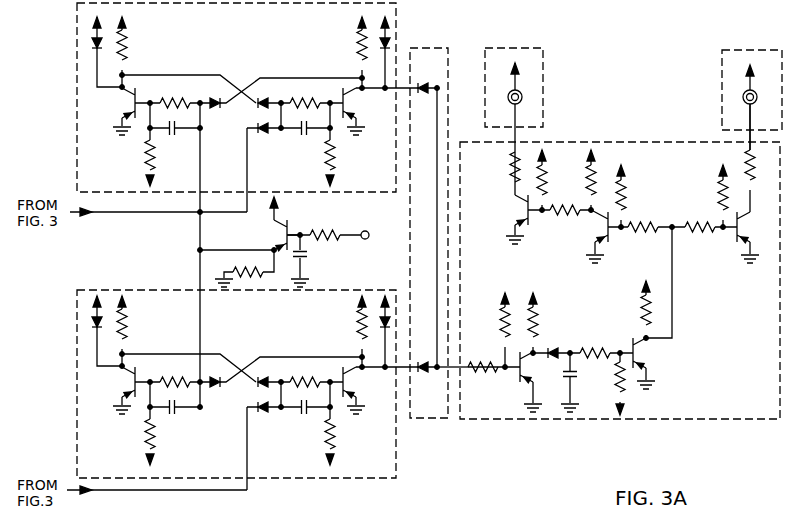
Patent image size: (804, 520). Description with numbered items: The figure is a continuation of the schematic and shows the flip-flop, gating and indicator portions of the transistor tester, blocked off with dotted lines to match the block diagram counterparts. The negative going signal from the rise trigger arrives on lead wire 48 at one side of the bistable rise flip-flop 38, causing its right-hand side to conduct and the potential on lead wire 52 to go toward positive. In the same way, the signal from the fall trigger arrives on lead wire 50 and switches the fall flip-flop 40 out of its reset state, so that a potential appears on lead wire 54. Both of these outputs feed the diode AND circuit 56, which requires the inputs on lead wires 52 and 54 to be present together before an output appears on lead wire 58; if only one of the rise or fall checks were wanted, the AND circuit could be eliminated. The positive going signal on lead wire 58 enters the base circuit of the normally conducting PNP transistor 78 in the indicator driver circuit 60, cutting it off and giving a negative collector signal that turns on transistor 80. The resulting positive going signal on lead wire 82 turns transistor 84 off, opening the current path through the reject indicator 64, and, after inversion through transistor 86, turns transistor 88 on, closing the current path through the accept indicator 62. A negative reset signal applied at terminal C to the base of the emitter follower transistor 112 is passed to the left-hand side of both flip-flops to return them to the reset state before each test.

The fall flip-flop 40 is at (75, 33).
The rise flip-flop 38 is at (75, 325).
The lead wire 50 is at (147, 212).
The lead wire 48 is at (137, 492).
The transistor 112 is at (280, 222).
The lead wire 54 is at (404, 52).
The lead wire 52 is at (402, 374).
The AND circuit 56 is at (448, 48).
The lead wire 58 is at (457, 374).
The indicator driver circuit 60 is at (712, 420).
The accept indicator 62 is at (543, 48).
The reject indicator 64 is at (724, 50).
The transistor 78 is at (517, 386).
The transistor 80 is at (650, 370).
The lead wire 82 is at (674, 305).
The transistor 84 is at (746, 238).
The transistor 86 is at (612, 236).
The transistor 88 is at (527, 229).